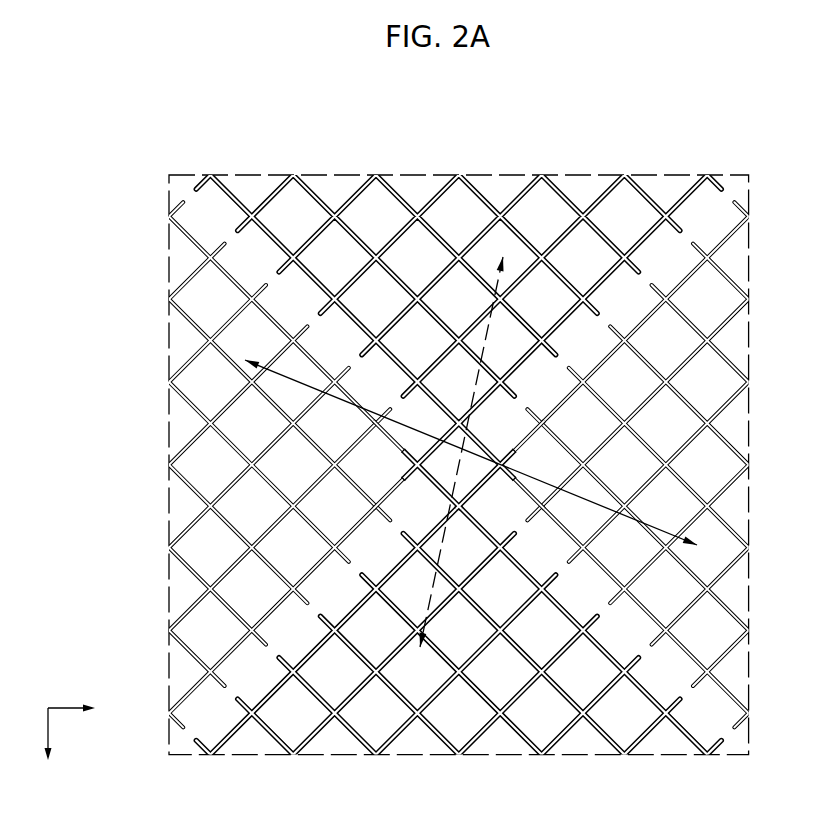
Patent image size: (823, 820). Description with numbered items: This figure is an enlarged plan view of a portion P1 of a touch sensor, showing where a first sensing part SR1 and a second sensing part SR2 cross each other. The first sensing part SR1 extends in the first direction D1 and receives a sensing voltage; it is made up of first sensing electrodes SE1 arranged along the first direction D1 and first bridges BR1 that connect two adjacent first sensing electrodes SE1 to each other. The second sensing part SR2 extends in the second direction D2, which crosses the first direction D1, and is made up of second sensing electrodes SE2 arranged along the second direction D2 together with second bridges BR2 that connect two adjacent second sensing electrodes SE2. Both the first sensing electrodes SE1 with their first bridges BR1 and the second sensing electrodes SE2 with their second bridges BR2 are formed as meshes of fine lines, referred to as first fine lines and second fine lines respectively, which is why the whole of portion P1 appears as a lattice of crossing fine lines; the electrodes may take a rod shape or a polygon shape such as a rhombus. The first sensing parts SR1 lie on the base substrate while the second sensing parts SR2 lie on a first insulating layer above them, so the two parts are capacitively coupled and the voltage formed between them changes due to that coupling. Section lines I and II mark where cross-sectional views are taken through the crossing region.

The portion P1 is at (661, 173).
The first sensing part SR1 is at (104, 408).
The first sensing electrode SE1 is at (258, 422).
The first bridge BR1 is at (393, 452).
The second sensing part SR2 is at (465, 106).
The second sensing electrode SE2 is at (398, 277).
The second bridge BR2 is at (442, 397).
The section line I-I' I is at (474, 451).
The section line II-II' II is at (462, 457).
The first direction D1 is at (86, 709).
The second direction D2 is at (50, 750).